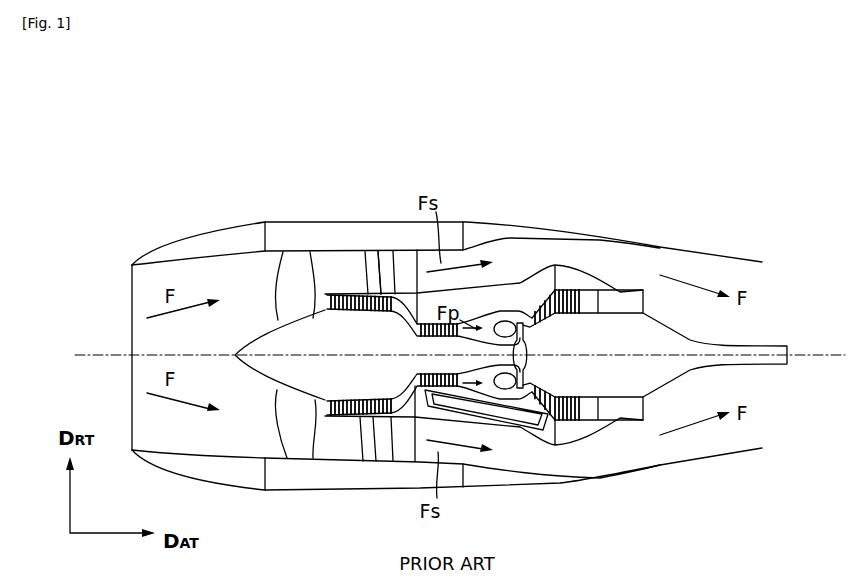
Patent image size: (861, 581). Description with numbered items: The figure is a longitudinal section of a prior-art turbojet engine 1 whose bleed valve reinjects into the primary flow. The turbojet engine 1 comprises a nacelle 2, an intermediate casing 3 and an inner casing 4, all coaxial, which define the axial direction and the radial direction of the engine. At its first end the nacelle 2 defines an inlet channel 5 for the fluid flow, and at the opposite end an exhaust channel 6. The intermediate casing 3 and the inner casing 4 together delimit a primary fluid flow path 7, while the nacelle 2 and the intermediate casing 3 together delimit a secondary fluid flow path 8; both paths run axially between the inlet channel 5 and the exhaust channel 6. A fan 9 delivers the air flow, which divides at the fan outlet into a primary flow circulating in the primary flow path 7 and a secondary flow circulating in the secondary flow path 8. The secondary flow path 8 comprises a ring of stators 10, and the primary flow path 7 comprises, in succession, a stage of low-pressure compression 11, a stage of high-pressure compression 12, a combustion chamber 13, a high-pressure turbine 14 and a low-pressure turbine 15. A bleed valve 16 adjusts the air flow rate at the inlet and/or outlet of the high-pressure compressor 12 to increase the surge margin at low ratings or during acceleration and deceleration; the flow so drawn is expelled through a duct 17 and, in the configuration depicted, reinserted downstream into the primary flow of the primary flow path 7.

The turbojet engine 1 is at (602, 141).
The nacelle 2 is at (603, 233).
The intermediate casing 3 is at (508, 278).
The inner casing 4 is at (252, 328).
The inlet channel 5 is at (144, 281).
The exhaust channel 6 is at (772, 304).
The primary fluid flow path 7 is at (400, 296).
The secondary fluid flow path 8 is at (461, 268).
The fan 9 is at (302, 438).
The ring of stators 10 is at (364, 296).
The stage of low-pressure compression 11 is at (359, 312).
The stage of high-pressure compression 12 is at (437, 336).
The combustion chamber 13 is at (507, 338).
The high-pressure turbine 14 is at (558, 308).
The low-pressure turbine 15 is at (592, 308).
The bleed valve 16 is at (512, 430).
The duct 17 is at (548, 428).